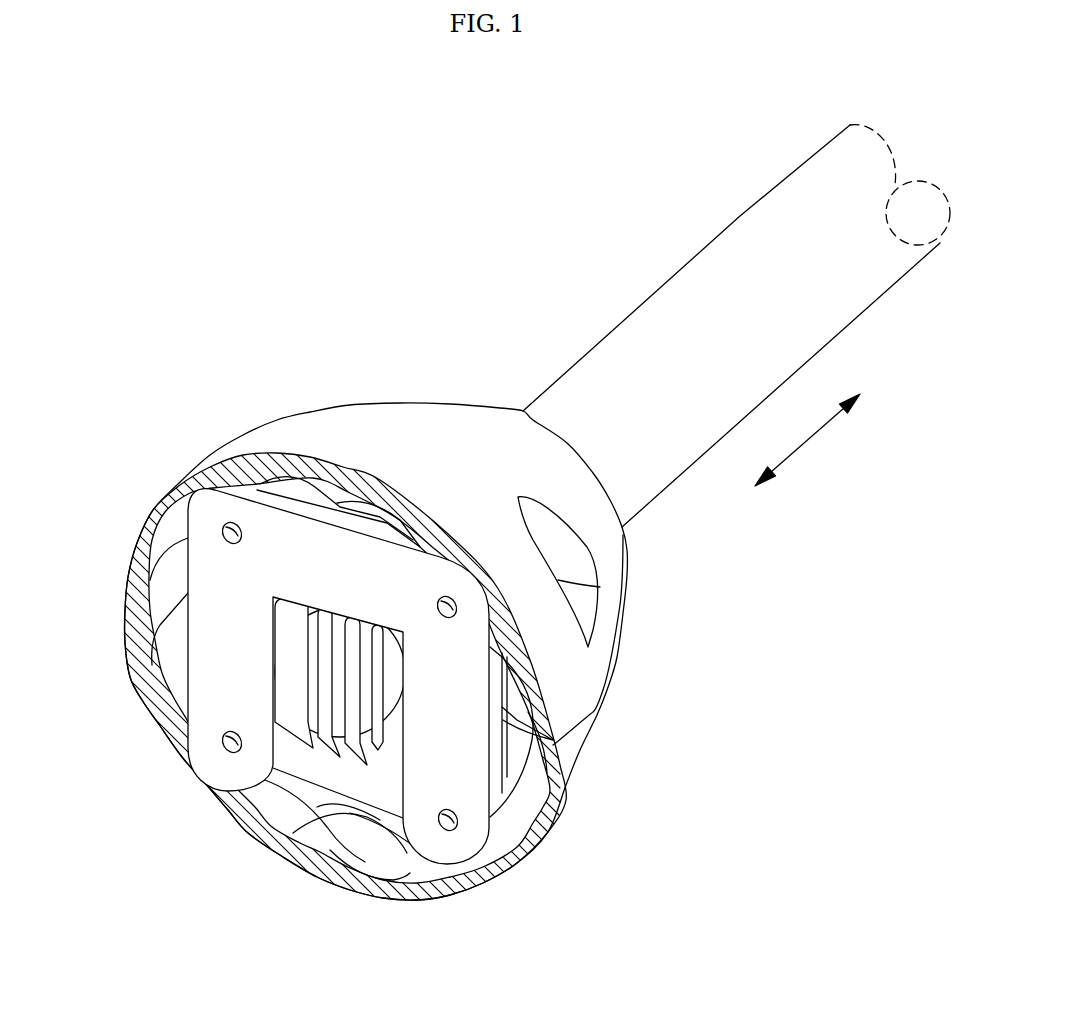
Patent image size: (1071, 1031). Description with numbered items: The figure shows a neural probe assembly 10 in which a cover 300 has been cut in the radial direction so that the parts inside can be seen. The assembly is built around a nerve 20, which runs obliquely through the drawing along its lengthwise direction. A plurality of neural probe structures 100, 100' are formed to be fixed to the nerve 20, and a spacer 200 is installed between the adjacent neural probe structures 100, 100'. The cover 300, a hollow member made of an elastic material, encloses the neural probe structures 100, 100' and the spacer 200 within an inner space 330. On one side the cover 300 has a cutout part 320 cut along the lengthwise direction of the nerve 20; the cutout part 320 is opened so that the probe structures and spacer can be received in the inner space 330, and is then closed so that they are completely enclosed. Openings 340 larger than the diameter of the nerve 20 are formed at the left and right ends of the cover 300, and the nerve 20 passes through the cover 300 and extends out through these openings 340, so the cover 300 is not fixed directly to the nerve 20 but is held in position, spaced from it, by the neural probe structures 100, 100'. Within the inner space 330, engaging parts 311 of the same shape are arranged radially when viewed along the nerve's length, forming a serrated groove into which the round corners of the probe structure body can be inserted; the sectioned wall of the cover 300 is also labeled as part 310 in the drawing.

The neural probe assembly 10 is at (378, 292).
The nerve 20 is at (724, 255).
The neural probe structure 100 is at (269, 676).
The neural probe structure 100' is at (595, 785).
The spacer 200 is at (513, 697).
The cover 300 is at (423, 420).
The housing body 310 is at (332, 420).
The engaging part 311 is at (170, 640).
The cutout part 320 is at (573, 740).
The inner space 330 is at (333, 801).
The opening 340 is at (578, 456).